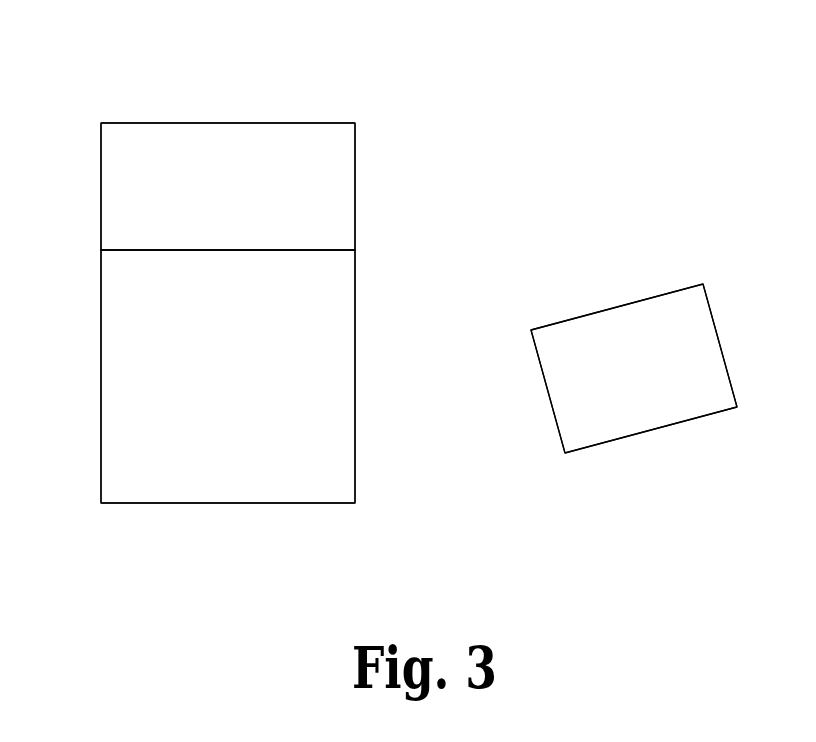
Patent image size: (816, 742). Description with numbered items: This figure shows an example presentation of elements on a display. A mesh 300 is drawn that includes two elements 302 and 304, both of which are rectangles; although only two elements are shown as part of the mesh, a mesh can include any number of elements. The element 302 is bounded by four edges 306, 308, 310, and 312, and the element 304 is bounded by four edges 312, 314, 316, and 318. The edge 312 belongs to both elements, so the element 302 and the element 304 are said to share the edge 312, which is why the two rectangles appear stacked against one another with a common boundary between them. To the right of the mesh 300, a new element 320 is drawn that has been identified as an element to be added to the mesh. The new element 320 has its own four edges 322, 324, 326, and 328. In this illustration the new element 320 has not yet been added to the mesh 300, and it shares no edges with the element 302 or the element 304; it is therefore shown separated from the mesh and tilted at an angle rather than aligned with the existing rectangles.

The mesh 300 is at (379, 98).
The element 302 is at (247, 198).
The element 304 is at (247, 388).
The edge 306 is at (101, 185).
The edge 308 is at (228, 123).
The edge 310 is at (355, 185).
The edge 312 is at (230, 250).
The edge 314 is at (101, 378).
The edge 316 is at (227, 503).
The edge 318 is at (355, 375).
The new element 320 is at (655, 376).
The edge 322 is at (615, 303).
The edge 324 is at (722, 343).
The edge 326 is at (650, 430).
The edge 328 is at (547, 392).